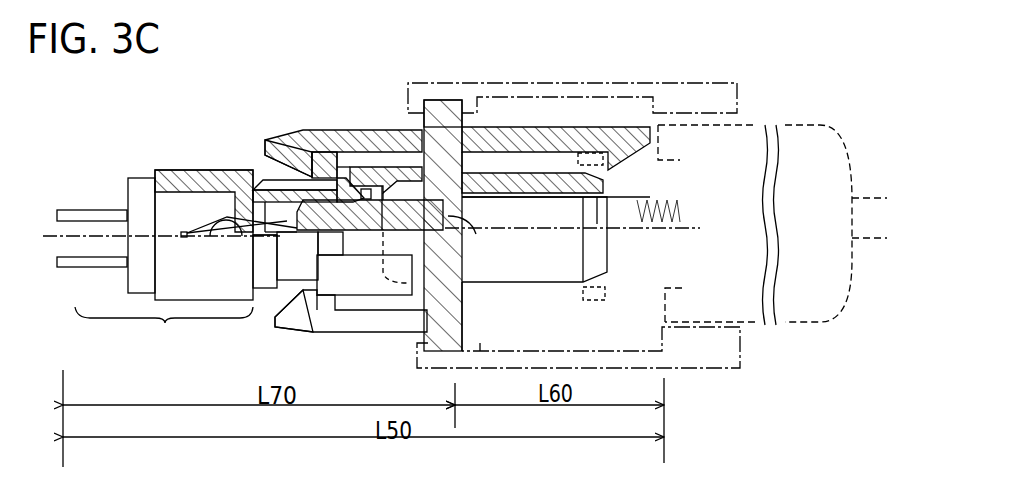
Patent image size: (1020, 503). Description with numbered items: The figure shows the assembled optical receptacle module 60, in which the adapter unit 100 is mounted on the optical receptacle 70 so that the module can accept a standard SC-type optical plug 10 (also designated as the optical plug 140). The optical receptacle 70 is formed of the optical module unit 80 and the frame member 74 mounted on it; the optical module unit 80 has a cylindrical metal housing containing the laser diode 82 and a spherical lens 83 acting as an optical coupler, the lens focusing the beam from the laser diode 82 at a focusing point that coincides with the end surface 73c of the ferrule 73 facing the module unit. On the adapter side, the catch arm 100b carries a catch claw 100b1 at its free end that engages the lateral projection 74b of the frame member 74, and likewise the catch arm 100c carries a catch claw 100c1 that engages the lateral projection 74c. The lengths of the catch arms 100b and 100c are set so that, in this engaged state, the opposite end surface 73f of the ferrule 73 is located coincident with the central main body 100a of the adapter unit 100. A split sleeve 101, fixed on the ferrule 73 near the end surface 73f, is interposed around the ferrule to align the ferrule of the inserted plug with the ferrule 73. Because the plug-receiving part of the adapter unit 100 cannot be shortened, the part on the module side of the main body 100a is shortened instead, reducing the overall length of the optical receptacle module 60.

The optical plug 10 is at (752, 130).
The optical receptacle module 60 is at (388, 41).
The optical receptacle 70 is at (178, 166).
The ferrule 73 is at (553, 202).
The end surface of the ferrule 73c is at (288, 222).
The end surface of the ferrule 73f is at (455, 216).
The frame member 74 is at (373, 166).
The lateral projection 74b is at (320, 150).
The lateral projection 74c is at (325, 312).
The optical module unit 80 is at (164, 329).
The laser diode 82 is at (183, 238).
The spherical lens 83 is at (225, 232).
The adapter unit 100 is at (539, 126).
The central main body of the adapter unit 100a is at (442, 100).
The catch arm 100b is at (300, 128).
The catch claw 100b1 is at (285, 150).
The catch arm 100c is at (373, 333).
The catch claw 100c1 is at (300, 310).
The split sleeve 101 is at (503, 196).
The optical plug 140 is at (655, 83).